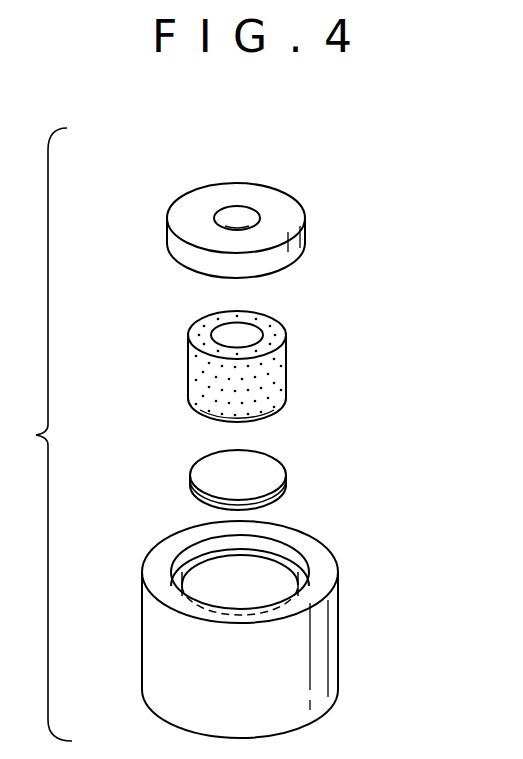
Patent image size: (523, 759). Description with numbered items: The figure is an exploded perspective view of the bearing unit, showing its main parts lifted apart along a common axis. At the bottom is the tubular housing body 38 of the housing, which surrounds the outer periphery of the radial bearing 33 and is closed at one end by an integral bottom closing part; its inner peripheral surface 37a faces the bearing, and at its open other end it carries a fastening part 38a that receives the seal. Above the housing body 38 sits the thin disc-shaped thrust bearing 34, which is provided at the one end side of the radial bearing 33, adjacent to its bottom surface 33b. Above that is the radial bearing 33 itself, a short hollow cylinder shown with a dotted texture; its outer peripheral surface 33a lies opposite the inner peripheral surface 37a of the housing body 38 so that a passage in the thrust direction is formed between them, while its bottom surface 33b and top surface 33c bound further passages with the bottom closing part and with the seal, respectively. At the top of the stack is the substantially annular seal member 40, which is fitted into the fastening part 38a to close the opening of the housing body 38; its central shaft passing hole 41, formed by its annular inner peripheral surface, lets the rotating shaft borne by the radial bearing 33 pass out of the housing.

The seal member 40 is at (287, 210).
The shaft passing hole 41 is at (247, 217).
The radial bearing 33 is at (282, 322).
The outer peripheral surface 33a is at (218, 377).
The bottom surface 33b is at (227, 422).
The top surface 33c is at (208, 325).
The thrust bearing 34 is at (257, 470).
The inner peripheral surface 37a is at (205, 590).
The housing body 38 is at (317, 640).
The fastening part 38a is at (285, 570).